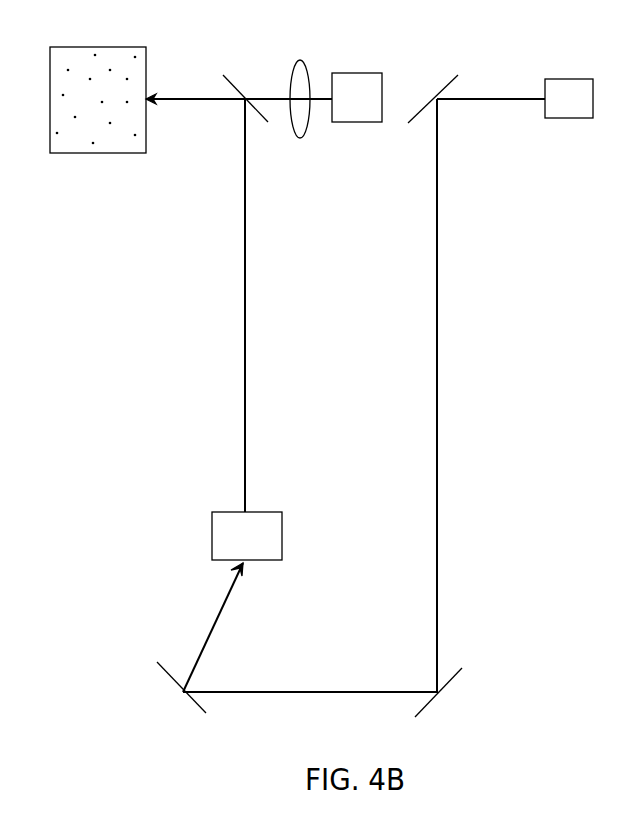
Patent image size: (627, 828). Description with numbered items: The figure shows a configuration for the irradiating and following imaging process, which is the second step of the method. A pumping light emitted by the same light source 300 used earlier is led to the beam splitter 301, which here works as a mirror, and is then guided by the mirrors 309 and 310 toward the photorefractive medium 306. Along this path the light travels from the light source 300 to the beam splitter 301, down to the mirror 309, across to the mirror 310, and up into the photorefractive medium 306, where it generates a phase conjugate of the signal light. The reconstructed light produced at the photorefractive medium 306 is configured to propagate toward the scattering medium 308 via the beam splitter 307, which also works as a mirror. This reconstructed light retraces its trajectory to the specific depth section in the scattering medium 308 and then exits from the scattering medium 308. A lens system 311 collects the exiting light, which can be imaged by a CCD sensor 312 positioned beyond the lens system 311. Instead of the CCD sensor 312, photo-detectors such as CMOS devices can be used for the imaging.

The light source 300 is at (570, 92).
The beam splitter 301 is at (437, 92).
The photorefractive medium 306 is at (268, 535).
The beam splitter 307 is at (223, 75).
The scattering medium 308 is at (120, 137).
The mirror 309 is at (430, 708).
The mirror 310 is at (170, 675).
The lens system 311 is at (300, 125).
The CCD sensor 312 is at (357, 110).